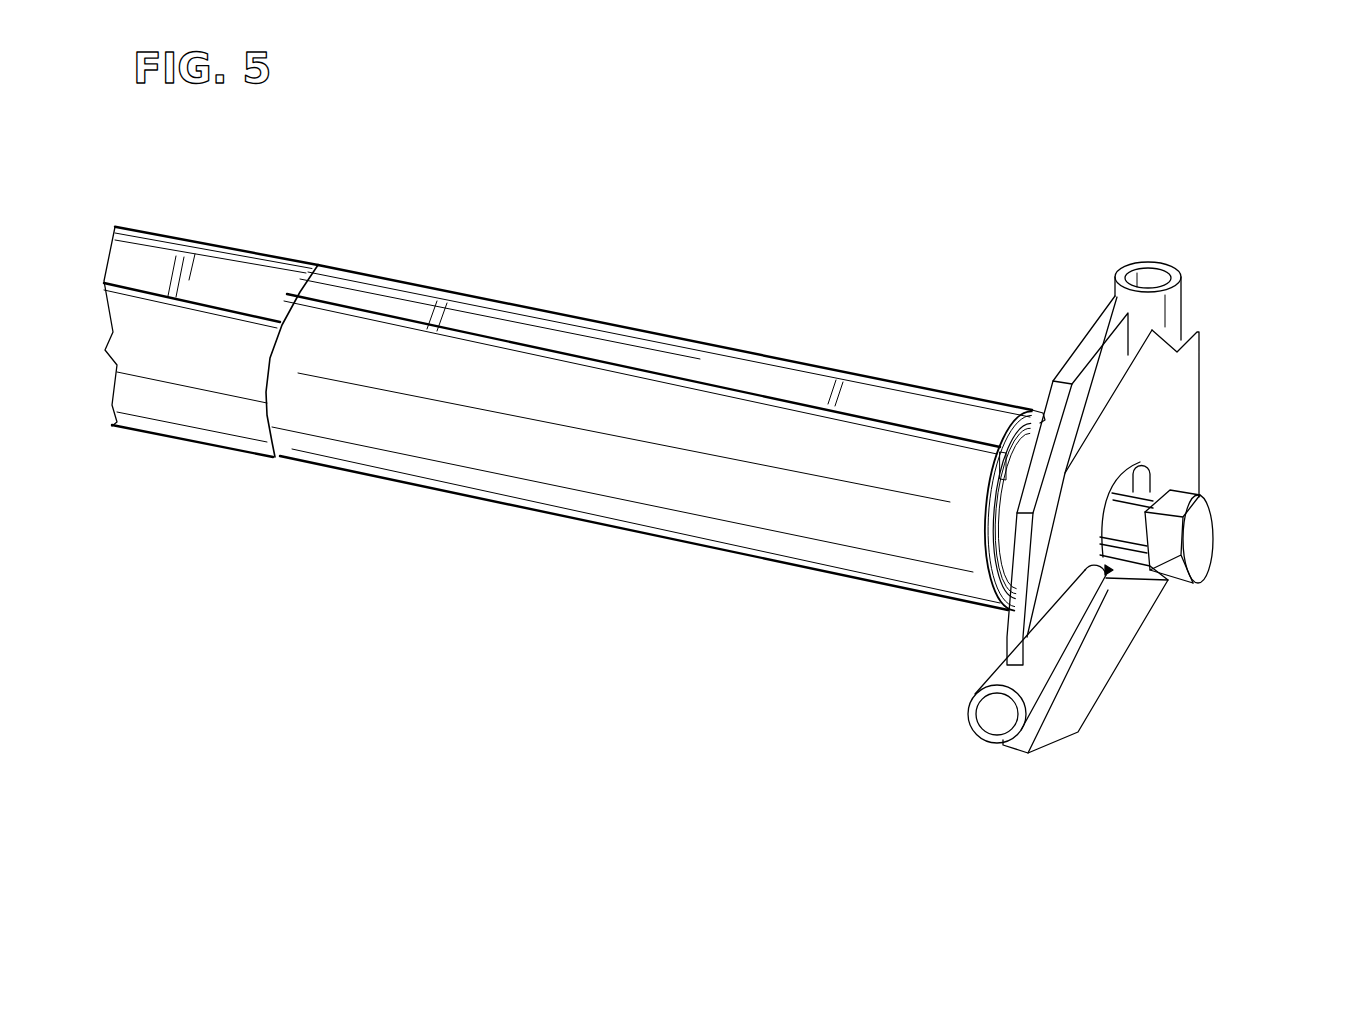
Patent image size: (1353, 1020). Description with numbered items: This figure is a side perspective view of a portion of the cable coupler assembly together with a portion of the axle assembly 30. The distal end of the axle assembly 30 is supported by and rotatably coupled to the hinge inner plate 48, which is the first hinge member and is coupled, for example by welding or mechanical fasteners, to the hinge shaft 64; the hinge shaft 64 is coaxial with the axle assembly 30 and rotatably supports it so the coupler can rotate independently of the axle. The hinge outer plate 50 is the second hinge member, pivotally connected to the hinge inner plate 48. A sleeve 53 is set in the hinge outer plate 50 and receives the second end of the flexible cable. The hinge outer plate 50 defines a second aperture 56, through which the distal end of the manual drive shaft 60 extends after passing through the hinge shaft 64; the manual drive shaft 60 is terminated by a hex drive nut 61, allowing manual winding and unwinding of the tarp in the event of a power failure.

The axle assembly 30 is at (467, 478).
The hinge inner plate 48 is at (1088, 380).
The hinge outer plate 50 is at (1098, 670).
The sleeve 53 is at (1000, 678).
The second aperture 56 is at (1112, 572).
The manual drive shaft 60 is at (1135, 507).
The hex drive nut 61 is at (1205, 540).
The hinge shaft 64 is at (1018, 476).